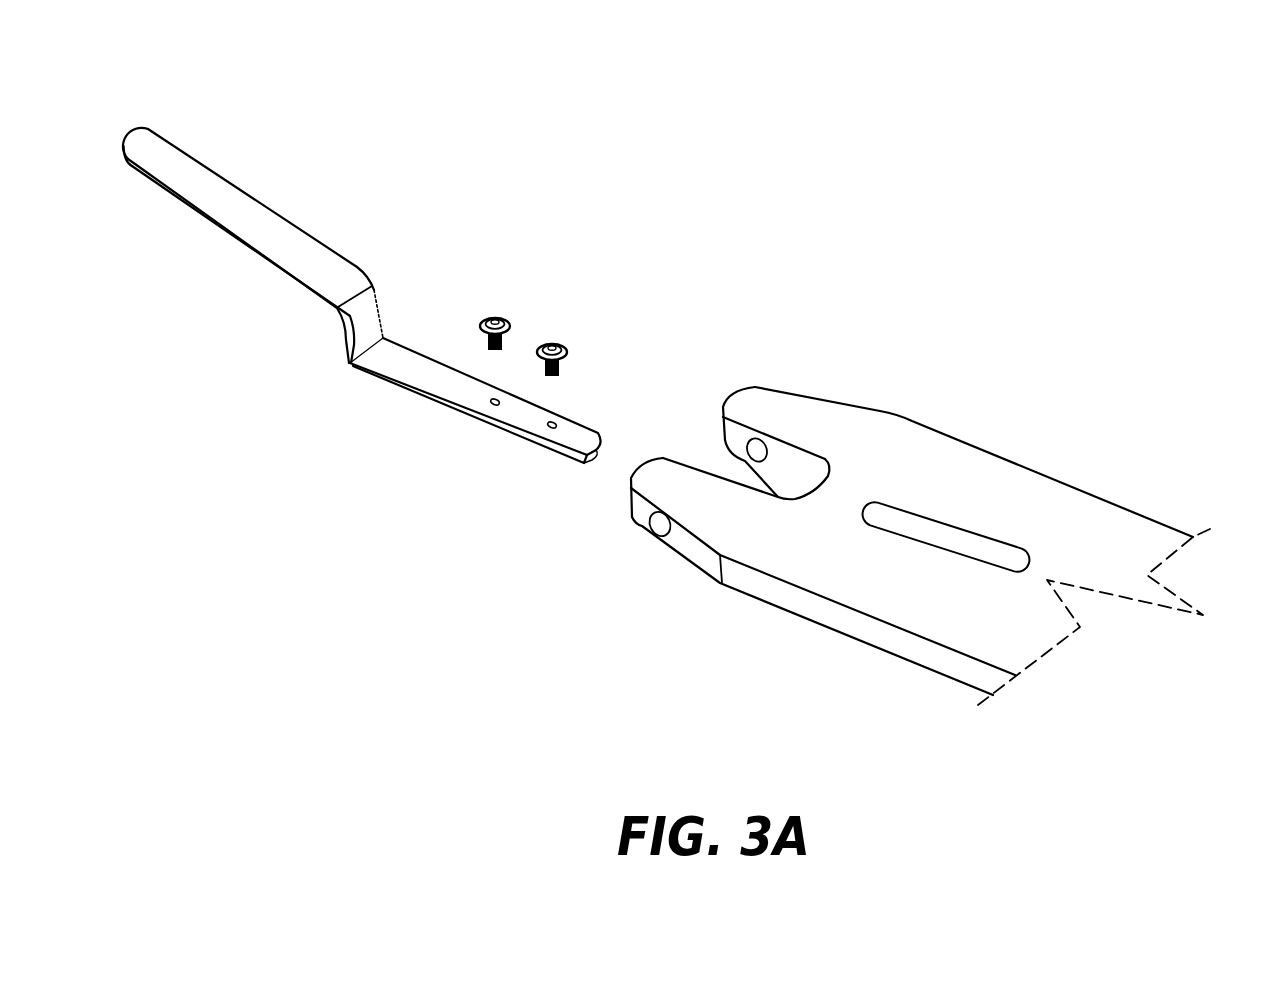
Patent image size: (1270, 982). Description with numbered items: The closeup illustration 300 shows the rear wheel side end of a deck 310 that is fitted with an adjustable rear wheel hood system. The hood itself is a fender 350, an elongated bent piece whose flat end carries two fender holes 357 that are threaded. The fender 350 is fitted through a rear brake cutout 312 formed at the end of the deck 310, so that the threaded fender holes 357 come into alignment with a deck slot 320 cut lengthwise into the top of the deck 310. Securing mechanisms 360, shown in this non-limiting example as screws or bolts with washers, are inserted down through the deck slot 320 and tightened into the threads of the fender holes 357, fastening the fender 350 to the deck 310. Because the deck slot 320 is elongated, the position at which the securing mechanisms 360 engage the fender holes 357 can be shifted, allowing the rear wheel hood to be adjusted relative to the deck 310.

The closeup illustration 300 is at (212, 43).
The deck 310 is at (1033, 513).
The rear brake cutout 312 is at (705, 440).
The deck slot 320 is at (943, 540).
The fender 350 is at (230, 203).
The fender holes 357 is at (549, 428).
The securing mechanisms 360 is at (492, 317).